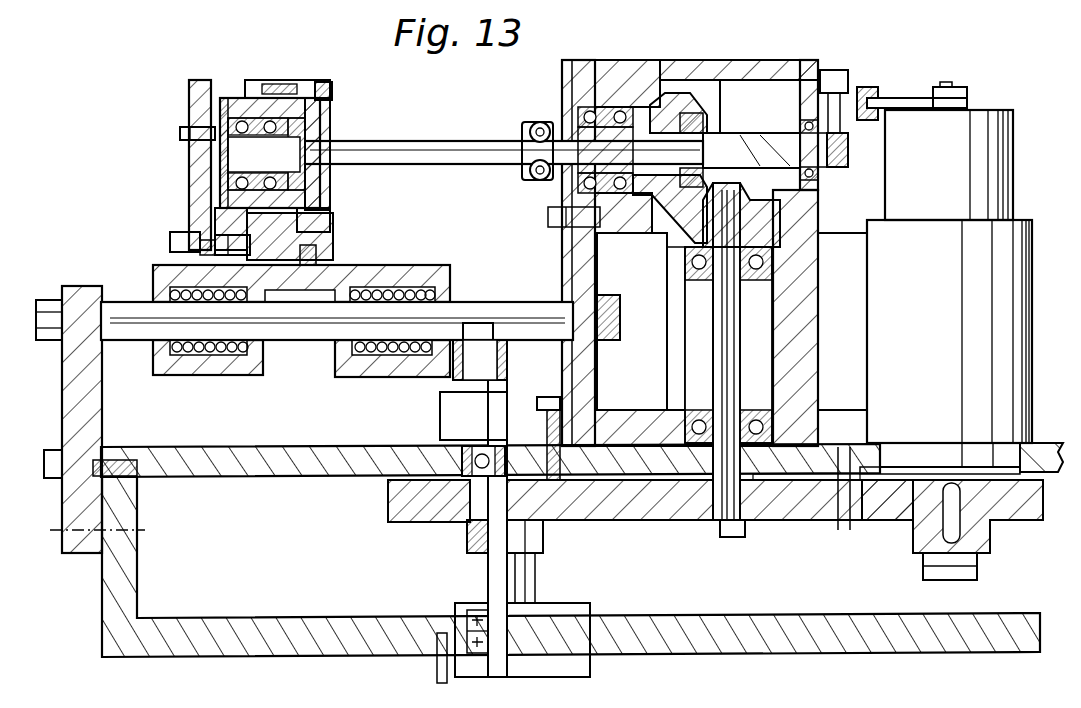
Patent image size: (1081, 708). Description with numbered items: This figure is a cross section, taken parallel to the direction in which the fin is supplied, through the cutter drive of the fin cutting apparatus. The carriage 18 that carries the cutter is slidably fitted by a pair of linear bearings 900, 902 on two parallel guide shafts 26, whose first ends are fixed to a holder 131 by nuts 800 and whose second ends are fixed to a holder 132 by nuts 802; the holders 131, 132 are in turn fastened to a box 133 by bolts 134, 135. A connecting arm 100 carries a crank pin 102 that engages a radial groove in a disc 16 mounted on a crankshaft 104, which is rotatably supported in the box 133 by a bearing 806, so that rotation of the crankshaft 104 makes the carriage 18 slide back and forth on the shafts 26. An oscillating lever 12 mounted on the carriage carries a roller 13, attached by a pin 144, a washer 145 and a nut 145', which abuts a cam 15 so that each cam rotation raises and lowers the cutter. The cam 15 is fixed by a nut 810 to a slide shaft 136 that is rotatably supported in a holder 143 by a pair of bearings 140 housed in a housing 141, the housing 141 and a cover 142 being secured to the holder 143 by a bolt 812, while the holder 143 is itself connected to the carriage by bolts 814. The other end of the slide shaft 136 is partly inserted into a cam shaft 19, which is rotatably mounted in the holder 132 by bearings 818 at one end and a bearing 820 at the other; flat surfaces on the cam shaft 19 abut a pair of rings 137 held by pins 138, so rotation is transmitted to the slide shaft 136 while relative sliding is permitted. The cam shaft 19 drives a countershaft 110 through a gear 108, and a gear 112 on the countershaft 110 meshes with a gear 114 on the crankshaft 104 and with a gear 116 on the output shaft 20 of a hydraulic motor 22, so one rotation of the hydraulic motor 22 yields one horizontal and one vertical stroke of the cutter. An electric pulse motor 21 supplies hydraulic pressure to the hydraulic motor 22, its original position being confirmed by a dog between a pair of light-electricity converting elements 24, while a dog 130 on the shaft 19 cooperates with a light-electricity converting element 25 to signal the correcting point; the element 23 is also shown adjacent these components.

The oscillating lever 12 is at (210, 200).
The roller 13 is at (222, 222).
The cam 15 is at (190, 95).
The disc 16 is at (440, 420).
The carriage 18 is at (410, 265).
The cam shaft 19 is at (745, 135).
The output shaft 20 is at (935, 525).
The electric pulse motor 21 is at (885, 204).
The hydraulic motor 22 is at (867, 300).
The sensor bracket 23 is at (868, 87).
The light-electricity converting elements 24 is at (960, 87).
The light-electricity converting element 25 is at (836, 70).
The guide shafts 26 is at (475, 302).
The connecting arm 100 is at (507, 355).
The crank pin 102 is at (478, 340).
The crankshaft 104 is at (488, 580).
The gear 108 is at (668, 93).
The countershaft 110 is at (720, 372).
The gear 112 is at (805, 520).
The gear 114 is at (578, 520).
The gear 116 is at (878, 520).
The dog 130 is at (802, 80).
The holder 131 is at (101, 392).
The holder 132 is at (565, 270).
The box 133 is at (231, 452).
The bolt 134 is at (100, 470).
The bolt 135 is at (549, 398).
The slide shaft 136 is at (350, 142).
The rings 137 is at (522, 130).
The pins 138 is at (540, 122).
The bearing 140 is at (234, 100).
The housing 141 is at (255, 98).
The cover 142 is at (330, 105).
The holder 143 is at (330, 222).
The pin 144 is at (178, 232).
The washer 145 is at (172, 252).
The nut 145' is at (139, 238).
The nuts 800 is at (50, 300).
The nuts 802 is at (620, 325).
The bearing 806 is at (462, 465).
The nut 810 is at (182, 130).
The bolt 812 is at (323, 82).
The bolts 814 is at (316, 250).
The bearings 818 is at (598, 107).
The bearing 820 is at (818, 175).
The linear bearing 900 is at (230, 355).
The linear bearing 902 is at (385, 360).